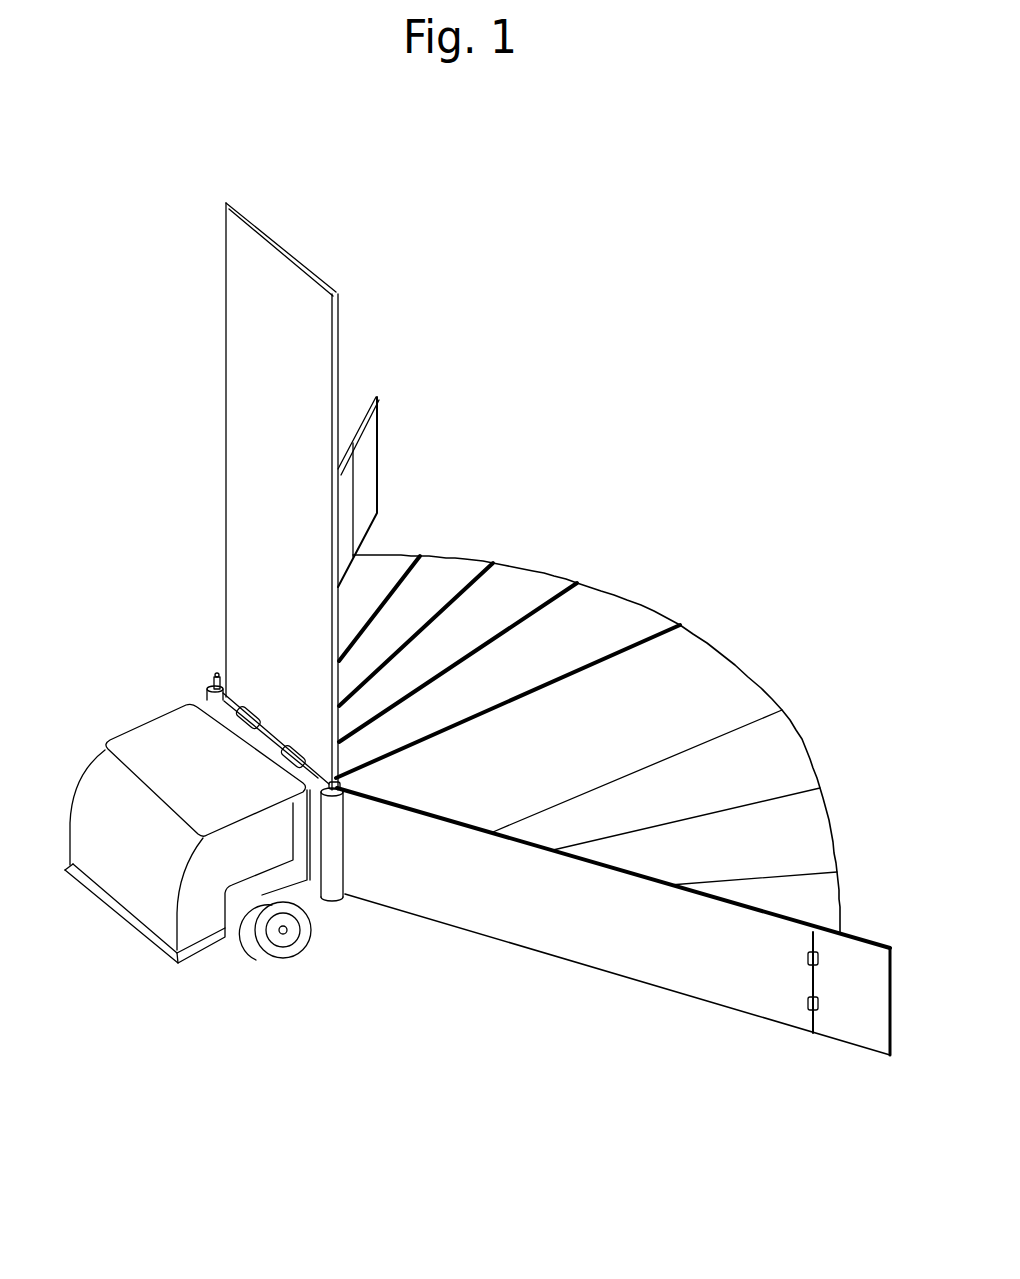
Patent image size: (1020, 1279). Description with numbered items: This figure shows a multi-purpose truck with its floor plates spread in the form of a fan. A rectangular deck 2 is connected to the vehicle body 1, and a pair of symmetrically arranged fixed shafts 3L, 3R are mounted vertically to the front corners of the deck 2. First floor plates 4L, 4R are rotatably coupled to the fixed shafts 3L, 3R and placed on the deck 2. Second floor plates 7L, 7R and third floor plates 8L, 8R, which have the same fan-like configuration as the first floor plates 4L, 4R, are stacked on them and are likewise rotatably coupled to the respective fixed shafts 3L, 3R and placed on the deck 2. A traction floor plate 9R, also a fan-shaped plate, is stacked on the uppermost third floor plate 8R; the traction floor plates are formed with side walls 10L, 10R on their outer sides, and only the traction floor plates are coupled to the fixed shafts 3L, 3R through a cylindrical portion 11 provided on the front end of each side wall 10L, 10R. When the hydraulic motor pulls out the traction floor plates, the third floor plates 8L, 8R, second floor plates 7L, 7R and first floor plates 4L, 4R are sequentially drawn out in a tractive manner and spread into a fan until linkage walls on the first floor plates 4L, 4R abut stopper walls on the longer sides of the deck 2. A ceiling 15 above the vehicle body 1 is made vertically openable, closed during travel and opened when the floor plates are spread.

The vehicle body 1 is at (143, 735).
The deck 2 is at (723, 670).
The fixed shaft 3L is at (337, 778).
The fixed shaft 3R is at (213, 680).
The first floor plate 4L is at (788, 748).
The first floor plate 4R is at (622, 610).
The second floor plate 7L is at (817, 830).
The second floor plate 7R is at (528, 580).
The third floor plate 8L is at (833, 902).
The third floor plate 8R is at (455, 570).
The traction floor plate 9R is at (387, 560).
The side wall 10L is at (713, 990).
The side wall 10R is at (342, 463).
The cylindrical portion 11 is at (333, 887).
The ceiling 15 is at (300, 284).